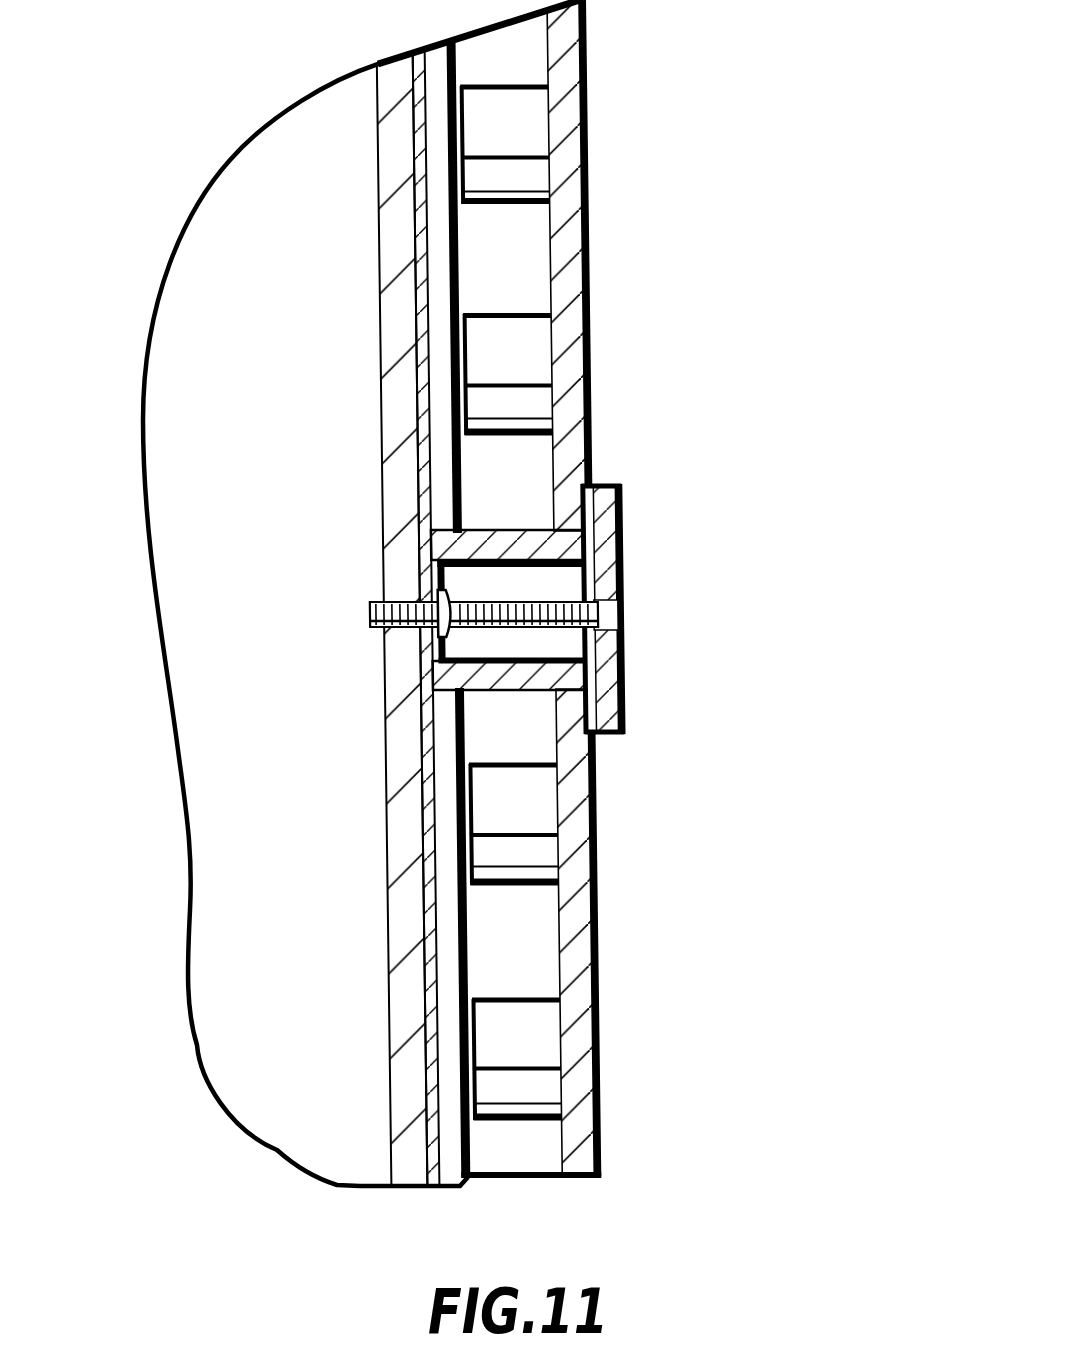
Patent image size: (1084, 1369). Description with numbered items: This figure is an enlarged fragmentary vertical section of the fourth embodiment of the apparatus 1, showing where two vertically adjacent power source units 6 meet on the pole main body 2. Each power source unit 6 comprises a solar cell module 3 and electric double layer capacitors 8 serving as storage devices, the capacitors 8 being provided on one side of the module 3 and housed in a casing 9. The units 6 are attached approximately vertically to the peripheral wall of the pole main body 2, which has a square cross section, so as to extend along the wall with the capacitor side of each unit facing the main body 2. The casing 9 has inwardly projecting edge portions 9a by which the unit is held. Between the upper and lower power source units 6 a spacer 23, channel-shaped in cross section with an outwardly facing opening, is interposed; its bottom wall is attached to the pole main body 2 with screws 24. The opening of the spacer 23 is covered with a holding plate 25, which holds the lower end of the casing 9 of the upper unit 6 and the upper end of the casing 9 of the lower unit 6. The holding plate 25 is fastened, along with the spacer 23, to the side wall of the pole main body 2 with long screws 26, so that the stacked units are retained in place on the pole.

The apparatus 1 is at (786, 184).
The pole main body 2 is at (396, 253).
The solar cell module 3 is at (565, 60).
The power source unit 6 is at (572, 277).
The electric double layer capacitor 8 is at (513, 142).
The casing 9 is at (414, 382).
The inwardly projecting edge portion 9a is at (600, 497).
The spacer 23 is at (426, 552).
The screw 24 is at (362, 613).
The holding plate 25 is at (613, 555).
The long screw 26 is at (608, 645).